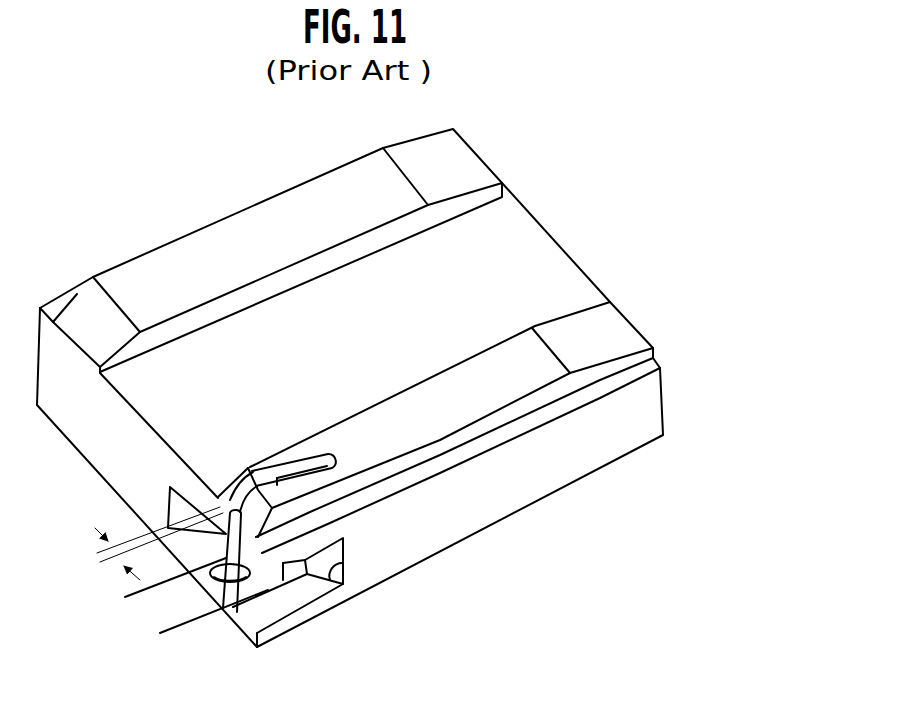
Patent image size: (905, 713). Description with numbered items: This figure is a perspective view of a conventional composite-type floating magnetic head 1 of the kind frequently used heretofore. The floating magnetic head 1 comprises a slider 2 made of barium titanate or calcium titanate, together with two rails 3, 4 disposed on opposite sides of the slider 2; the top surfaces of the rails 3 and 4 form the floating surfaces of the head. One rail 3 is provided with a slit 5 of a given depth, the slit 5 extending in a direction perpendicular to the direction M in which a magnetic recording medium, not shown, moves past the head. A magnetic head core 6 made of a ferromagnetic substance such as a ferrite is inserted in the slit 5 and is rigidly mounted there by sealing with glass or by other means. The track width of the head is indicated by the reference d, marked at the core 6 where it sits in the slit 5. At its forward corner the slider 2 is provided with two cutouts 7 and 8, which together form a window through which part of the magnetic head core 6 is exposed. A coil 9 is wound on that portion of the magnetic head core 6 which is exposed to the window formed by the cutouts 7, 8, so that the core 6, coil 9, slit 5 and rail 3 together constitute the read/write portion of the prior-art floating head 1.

The floating magnetic head 1 is at (492, 150).
The slider 2 is at (540, 258).
The rail 3 is at (512, 388).
The rail 4 is at (273, 222).
The slit 5 is at (318, 468).
The magnetic head core 6 is at (263, 593).
The cutout 7 is at (165, 513).
The cutout 8 is at (330, 578).
The coil 9 is at (190, 620).
The direction of medium movement M is at (583, 267).
The track width d is at (148, 544).